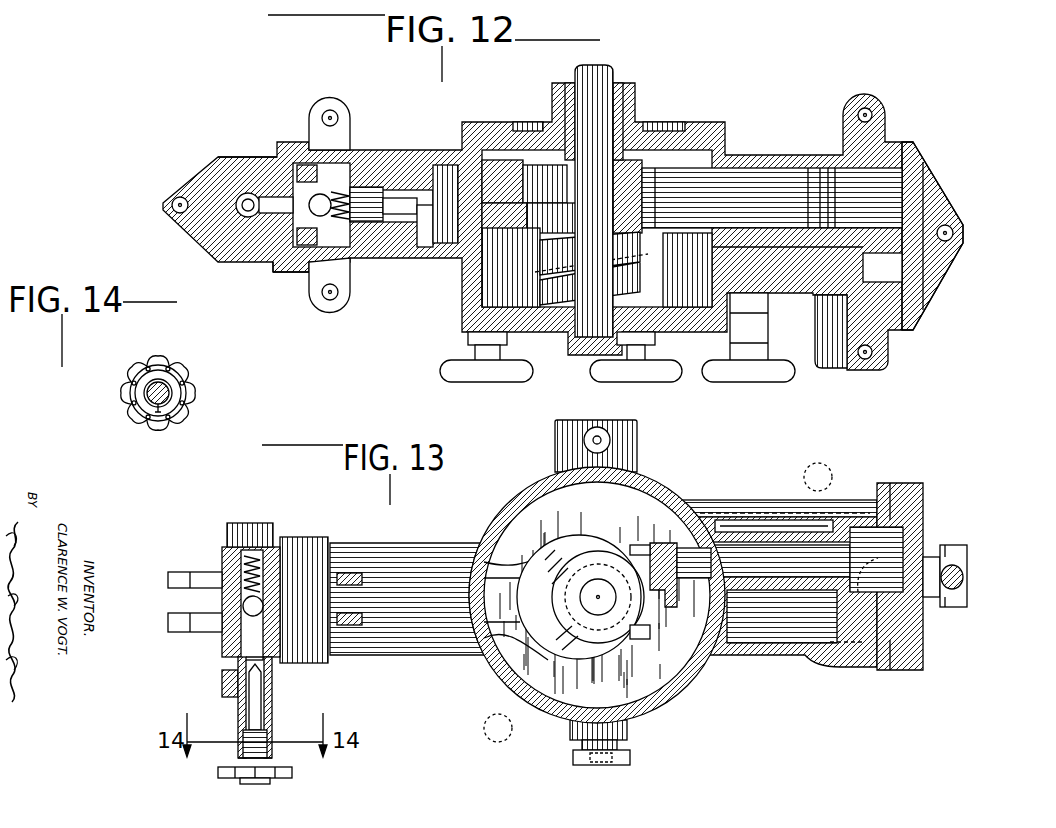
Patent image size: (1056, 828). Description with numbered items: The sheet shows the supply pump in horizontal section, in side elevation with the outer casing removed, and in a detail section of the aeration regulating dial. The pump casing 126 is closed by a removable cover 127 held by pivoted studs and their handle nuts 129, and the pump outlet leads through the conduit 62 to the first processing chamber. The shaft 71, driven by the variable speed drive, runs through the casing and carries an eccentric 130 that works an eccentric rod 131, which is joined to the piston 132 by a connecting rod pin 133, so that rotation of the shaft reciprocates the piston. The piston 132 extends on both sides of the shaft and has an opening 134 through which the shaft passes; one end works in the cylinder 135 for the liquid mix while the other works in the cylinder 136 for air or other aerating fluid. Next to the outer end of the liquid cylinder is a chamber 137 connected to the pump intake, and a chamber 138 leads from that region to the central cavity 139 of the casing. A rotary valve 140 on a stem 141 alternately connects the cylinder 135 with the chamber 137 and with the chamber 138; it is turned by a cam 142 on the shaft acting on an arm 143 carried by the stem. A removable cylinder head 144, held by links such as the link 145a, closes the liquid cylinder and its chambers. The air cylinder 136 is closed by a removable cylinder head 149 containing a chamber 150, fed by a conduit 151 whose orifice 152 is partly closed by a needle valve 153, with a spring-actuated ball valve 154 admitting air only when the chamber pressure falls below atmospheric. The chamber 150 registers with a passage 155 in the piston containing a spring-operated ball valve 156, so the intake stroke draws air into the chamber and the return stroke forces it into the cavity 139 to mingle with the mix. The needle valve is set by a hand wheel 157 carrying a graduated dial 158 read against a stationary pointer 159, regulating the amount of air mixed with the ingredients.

In FIG. 12, the shaft 71 is at (600, 61).
In FIG. 12, the removable cover 127 is at (465, 322).
In FIG. 12, the handle nuts 129 is at (497, 378).
In FIG. 12, the piston 132 is at (400, 170).
In FIG. 12, the connecting rod pin 133 is at (450, 243).
In FIG. 12, the cylinder 135 is at (870, 163).
In FIG. 12, the cylinder 136 is at (377, 262).
In FIG. 12, the chamber 137 is at (882, 267).
In FIG. 12, the cam 142 is at (638, 285).
In FIG. 12, the removable cylinder head 144 is at (937, 187).
In FIG. 13, the removable cylinder head 144 is at (922, 513).
In FIG. 12, the removable cylinder head 149 is at (290, 256).
In FIG. 13, the removable cylinder head 149 is at (293, 538).
In FIG. 12, the chamber 150 is at (272, 197).
In FIG. 13, the chamber 150 is at (227, 587).
In FIG. 12, the passage 155 is at (370, 186).
In FIG. 12, the spring-operated ball valve 156 is at (338, 176).
In FIG. 13, the conduit 62 is at (600, 421).
In FIG. 13, the pump casing 126 is at (432, 543).
In FIG. 13, the eccentric 130 is at (550, 557).
In FIG. 13, the eccentric rod 131 is at (508, 625).
In FIG. 13, the opening 134 is at (548, 617).
In FIG. 13, the chamber 138 is at (782, 512).
In FIG. 13, the central cavity 139 is at (597, 595).
In FIG. 13, the rotary valve 140 is at (888, 590).
In FIG. 13, the stem 141 is at (785, 570).
In FIG. 13, the arm 143 is at (657, 540).
In FIG. 13, the link 145a is at (966, 578).
In FIG. 13, the conduit 151 is at (220, 687).
In FIG. 13, the orifice 152 is at (263, 663).
In FIG. 13, the needle valve 153 is at (257, 705).
In FIG. 13, the spring-actuated ball valve 154 is at (225, 607).
In FIG. 13, the hand wheel 157 is at (293, 771).
In FIG. 14, the hand wheel 157 is at (193, 377).
In FIG. 14, the graduated dial 158 is at (195, 398).
In FIG. 14, the stationary pointer 159 is at (158, 405).